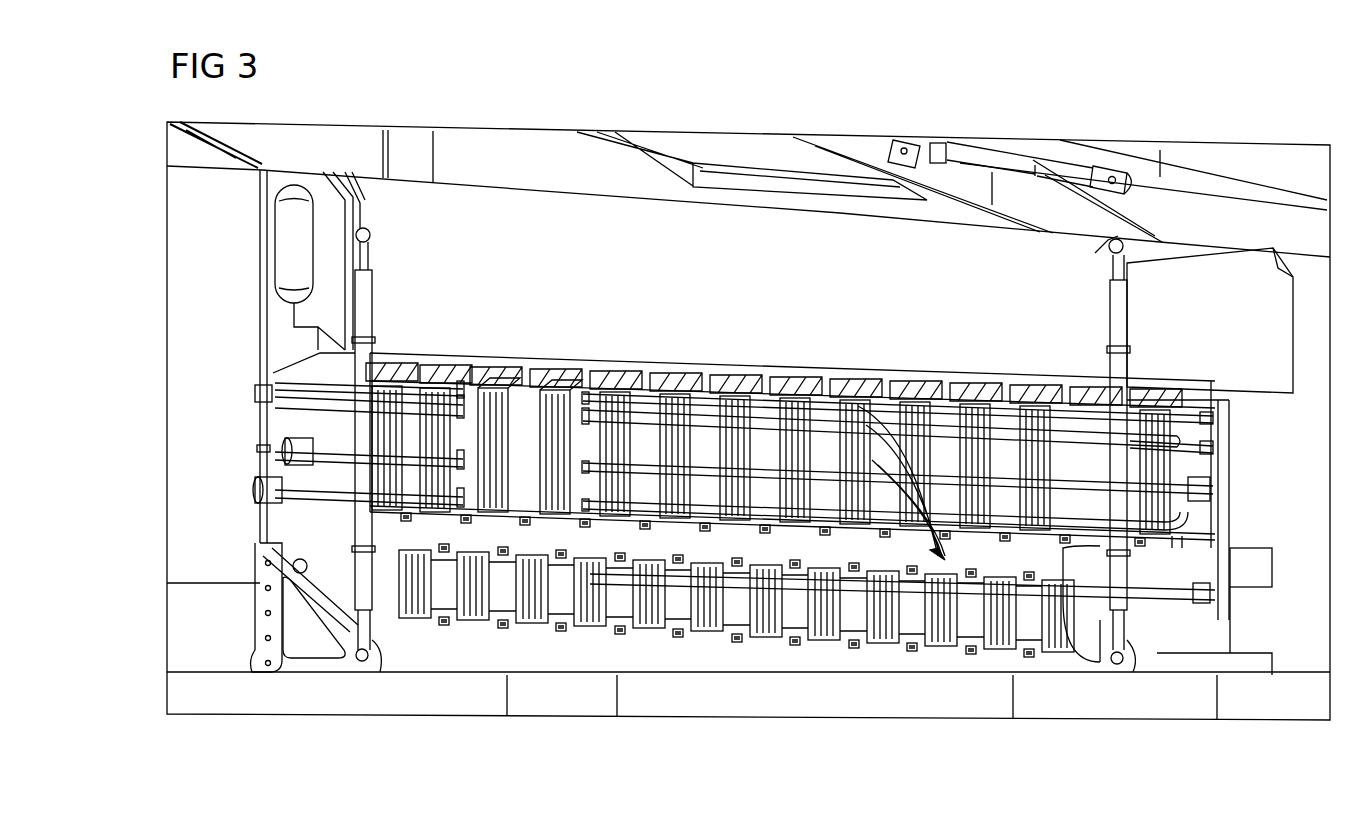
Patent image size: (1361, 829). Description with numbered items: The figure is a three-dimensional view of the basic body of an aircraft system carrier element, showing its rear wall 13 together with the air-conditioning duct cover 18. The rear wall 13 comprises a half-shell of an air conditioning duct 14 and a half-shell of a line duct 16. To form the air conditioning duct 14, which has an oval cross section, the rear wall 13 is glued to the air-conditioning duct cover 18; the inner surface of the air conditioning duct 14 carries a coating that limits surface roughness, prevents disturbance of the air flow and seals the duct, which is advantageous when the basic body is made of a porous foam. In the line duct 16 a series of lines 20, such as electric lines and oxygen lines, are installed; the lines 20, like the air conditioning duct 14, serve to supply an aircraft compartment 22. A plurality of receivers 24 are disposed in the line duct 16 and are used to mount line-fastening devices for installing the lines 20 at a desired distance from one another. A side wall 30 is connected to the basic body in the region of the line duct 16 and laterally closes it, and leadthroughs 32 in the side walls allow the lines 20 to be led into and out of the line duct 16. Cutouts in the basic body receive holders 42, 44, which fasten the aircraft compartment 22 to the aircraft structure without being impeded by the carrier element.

The rear wall 13 is at (275, 183).
The air conditioning duct 14 is at (290, 240).
The line duct 16 is at (265, 447).
The air-conditioning duct cover 18 is at (1273, 334).
The lines 20 is at (905, 490).
The aircraft compartment 22 is at (506, 148).
The receivers 24 is at (580, 368).
The side wall 30 is at (1218, 458).
The leadthroughs 32 is at (1228, 450).
The holder 42 is at (345, 663).
The holder 44 is at (1100, 672).